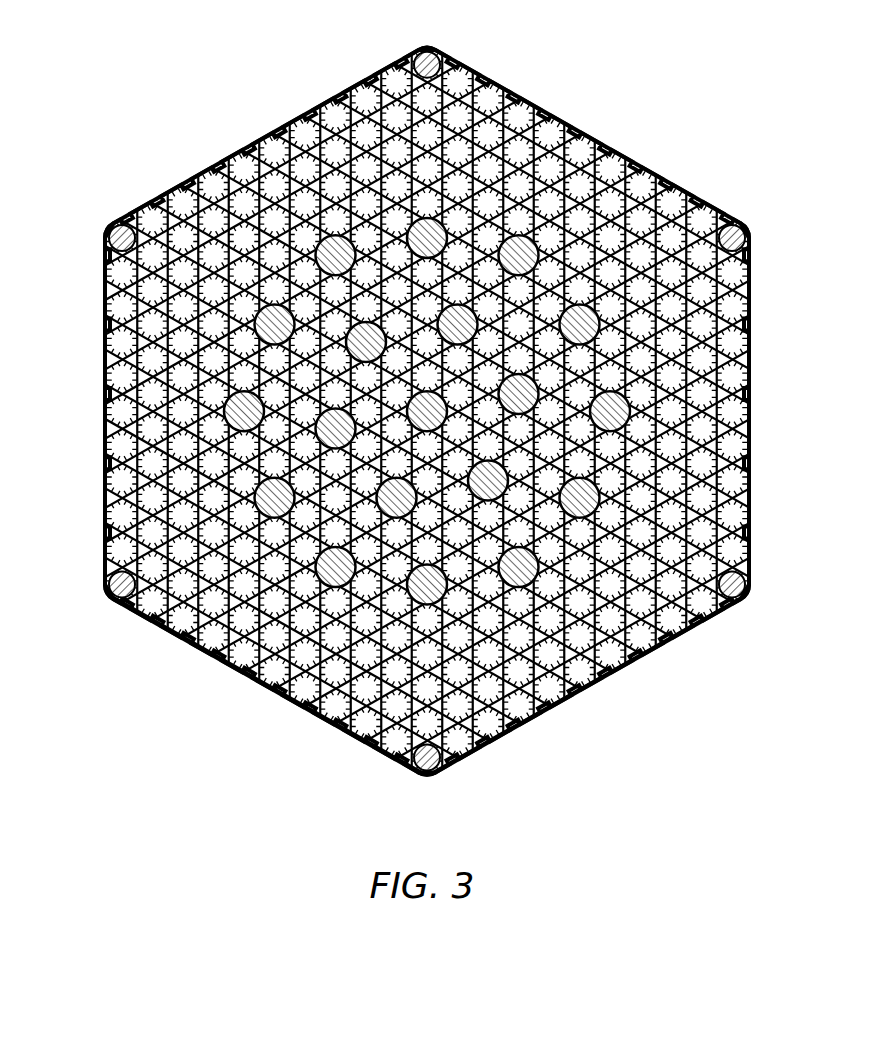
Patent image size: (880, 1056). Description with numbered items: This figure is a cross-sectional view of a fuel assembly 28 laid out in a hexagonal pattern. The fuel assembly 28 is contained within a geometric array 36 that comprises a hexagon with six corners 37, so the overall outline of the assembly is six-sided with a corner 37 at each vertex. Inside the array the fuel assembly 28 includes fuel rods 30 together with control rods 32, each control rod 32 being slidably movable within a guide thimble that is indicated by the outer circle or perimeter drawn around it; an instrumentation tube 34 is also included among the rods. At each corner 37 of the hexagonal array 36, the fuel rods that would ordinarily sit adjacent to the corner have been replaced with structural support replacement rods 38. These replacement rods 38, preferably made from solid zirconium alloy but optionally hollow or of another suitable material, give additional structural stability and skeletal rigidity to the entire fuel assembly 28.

The fuel assembly 28 is at (585, 798).
The fuel rods 30 is at (612, 669).
The control rods 32 is at (540, 250).
The instrumentation tube 34 is at (429, 391).
The geometric array 36 is at (668, 120).
The corners 37 is at (446, 42).
The structural support replacement rods 38 is at (416, 53).